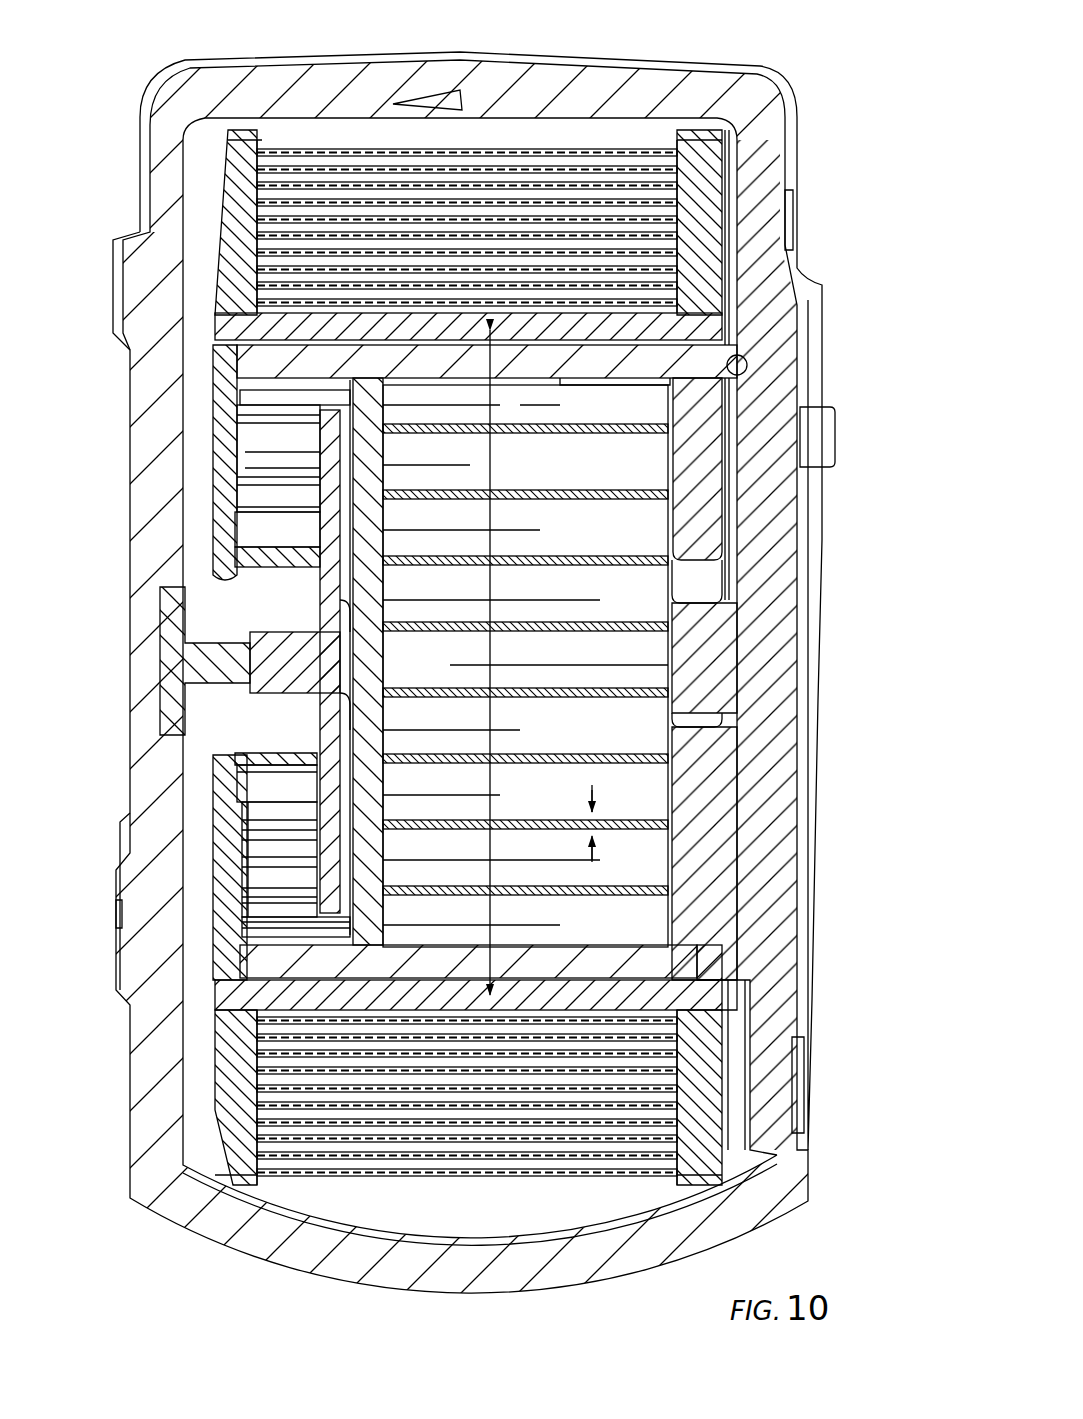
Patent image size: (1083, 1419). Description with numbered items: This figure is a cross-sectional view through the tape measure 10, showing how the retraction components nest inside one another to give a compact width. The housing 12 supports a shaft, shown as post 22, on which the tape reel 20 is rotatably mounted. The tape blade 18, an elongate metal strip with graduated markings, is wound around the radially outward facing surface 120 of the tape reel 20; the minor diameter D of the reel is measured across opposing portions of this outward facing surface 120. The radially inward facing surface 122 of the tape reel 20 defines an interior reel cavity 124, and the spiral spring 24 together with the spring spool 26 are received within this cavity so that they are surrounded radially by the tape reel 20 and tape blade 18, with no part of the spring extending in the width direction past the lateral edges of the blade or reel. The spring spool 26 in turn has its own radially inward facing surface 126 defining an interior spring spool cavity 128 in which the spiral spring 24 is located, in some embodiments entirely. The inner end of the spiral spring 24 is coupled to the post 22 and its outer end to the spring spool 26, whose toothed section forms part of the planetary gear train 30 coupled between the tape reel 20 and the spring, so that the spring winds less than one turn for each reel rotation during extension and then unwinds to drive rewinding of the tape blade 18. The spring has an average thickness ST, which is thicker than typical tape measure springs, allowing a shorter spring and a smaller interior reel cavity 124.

The tape measure 10 is at (814, 37).
The housing 12 is at (766, 116).
The tape blade 18 is at (622, 153).
The tape reel 20 is at (700, 228).
The post 22 is at (640, 655).
The spiral spring 24 is at (673, 760).
The spring spool 26 is at (687, 969).
The planetary gear train 30 is at (260, 481).
The radially outward facing surface 120 is at (368, 300).
The radially inward facing surface 122 is at (618, 352).
The interior reel cavity 124 is at (718, 1000).
The radially inward facing surface of spring spool 126 is at (580, 943).
The interior spring spool cavity 128 is at (420, 788).
The minor diameter D is at (460, 645).
The spring average thickness ST is at (593, 855).